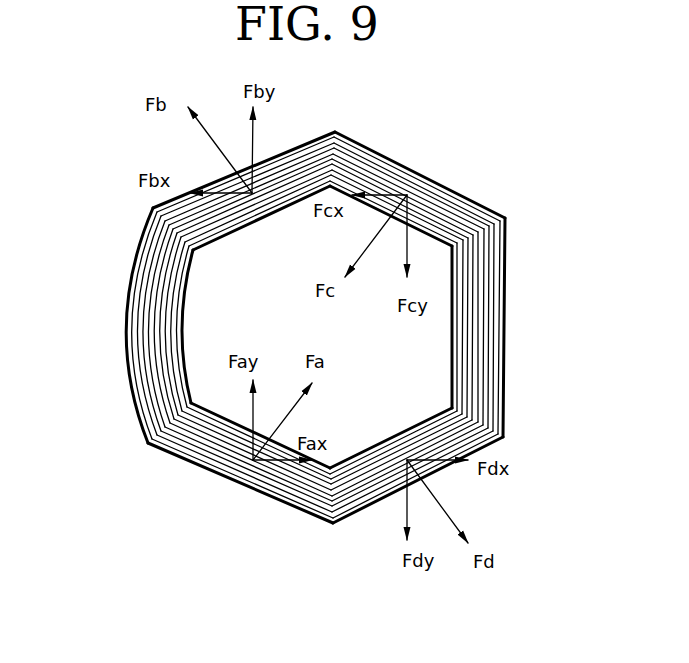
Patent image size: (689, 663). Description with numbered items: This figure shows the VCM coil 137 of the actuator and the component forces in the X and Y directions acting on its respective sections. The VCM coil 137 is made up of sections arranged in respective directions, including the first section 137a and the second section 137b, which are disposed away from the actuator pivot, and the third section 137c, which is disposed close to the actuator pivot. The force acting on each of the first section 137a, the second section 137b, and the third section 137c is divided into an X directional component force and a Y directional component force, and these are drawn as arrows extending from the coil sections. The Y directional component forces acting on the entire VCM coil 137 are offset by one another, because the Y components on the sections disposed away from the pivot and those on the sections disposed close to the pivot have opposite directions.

The VCM coil 137 is at (127, 458).
The first section 137a is at (271, 485).
The second section 137b is at (233, 208).
The third section 137c is at (437, 198).